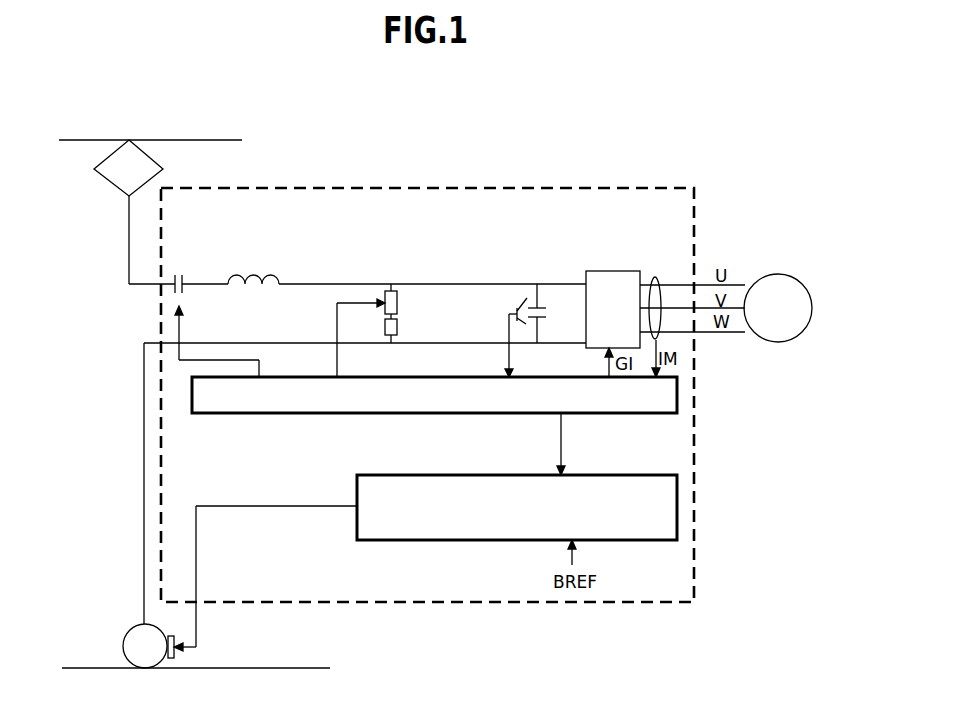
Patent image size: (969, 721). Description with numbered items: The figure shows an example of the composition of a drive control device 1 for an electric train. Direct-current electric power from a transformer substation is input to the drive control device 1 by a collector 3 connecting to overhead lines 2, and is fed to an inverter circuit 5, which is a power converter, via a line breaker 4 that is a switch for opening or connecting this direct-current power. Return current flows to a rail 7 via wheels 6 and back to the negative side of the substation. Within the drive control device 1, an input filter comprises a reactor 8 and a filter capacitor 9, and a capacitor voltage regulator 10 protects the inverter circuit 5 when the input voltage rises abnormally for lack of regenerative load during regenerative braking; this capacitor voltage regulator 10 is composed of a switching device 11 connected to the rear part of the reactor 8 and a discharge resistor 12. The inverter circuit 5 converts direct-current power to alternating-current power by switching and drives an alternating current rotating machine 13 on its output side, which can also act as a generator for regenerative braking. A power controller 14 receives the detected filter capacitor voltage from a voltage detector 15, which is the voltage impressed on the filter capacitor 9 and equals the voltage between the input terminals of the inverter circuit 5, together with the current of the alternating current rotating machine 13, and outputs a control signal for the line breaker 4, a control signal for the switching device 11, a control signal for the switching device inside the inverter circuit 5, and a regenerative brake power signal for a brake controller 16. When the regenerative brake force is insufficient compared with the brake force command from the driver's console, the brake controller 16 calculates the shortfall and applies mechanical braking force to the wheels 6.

The drive control device 1 is at (573, 187).
The overhead lines 2 is at (210, 140).
The collector 3 is at (165, 169).
The line breaker 4 is at (183, 272).
The inverter circuit 5 is at (629, 270).
The wheels 6 is at (123, 643).
The rail 7 is at (251, 668).
The reactor 8 is at (256, 271).
The filter capacitor 9 is at (547, 305).
The capacitor voltage regulator 10 is at (419, 308).
The switching device 11 is at (399, 287).
The discharge resistor 12 is at (397, 338).
The alternating current rotating machine 13 is at (767, 342).
The power controller 14 is at (677, 403).
The voltage detector 15 is at (522, 300).
The brake controller 16 is at (677, 503).